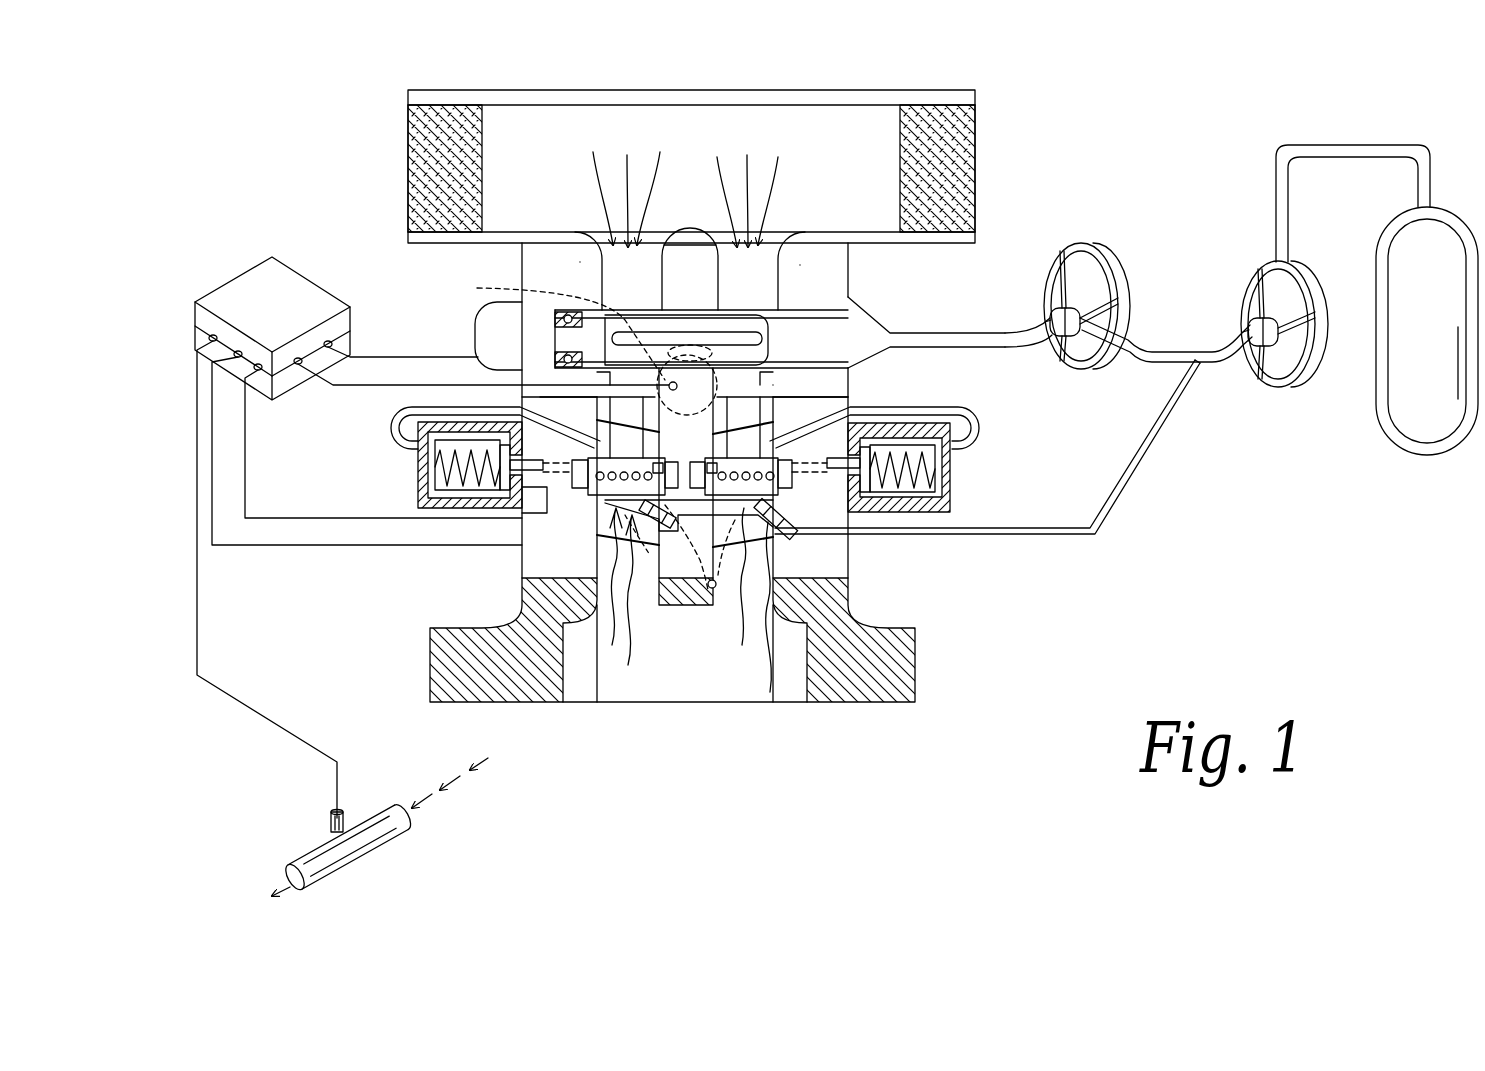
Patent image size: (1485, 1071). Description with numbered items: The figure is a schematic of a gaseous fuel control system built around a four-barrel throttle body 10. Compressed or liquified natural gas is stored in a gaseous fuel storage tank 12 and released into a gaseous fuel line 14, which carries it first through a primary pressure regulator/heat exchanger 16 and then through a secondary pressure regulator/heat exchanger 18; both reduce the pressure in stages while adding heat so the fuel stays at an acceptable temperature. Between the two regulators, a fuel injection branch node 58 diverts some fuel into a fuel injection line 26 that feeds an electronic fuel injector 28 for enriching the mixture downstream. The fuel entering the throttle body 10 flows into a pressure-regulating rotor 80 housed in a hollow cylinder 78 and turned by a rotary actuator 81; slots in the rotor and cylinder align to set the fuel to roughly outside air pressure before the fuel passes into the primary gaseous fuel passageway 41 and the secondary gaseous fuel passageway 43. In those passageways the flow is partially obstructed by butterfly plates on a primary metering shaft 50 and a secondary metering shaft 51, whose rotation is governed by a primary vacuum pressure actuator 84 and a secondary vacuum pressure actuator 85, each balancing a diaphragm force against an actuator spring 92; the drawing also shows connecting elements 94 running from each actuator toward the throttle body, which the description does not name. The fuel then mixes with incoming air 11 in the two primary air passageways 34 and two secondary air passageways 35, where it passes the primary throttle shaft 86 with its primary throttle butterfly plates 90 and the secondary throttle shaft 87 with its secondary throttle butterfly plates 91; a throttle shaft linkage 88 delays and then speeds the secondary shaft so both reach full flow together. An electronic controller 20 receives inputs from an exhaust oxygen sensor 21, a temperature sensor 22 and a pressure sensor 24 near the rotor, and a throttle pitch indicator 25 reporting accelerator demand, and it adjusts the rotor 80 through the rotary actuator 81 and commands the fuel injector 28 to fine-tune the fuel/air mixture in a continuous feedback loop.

The throttle body 10 is at (812, 558).
The air 11 is at (685, 189).
The gaseous fuel storage tank 12 is at (1442, 455).
The gaseous fuel line 14 is at (1312, 142).
The primary pressure regulator/heat exchanger 16 is at (1240, 272).
The secondary pressure regulator/heat exchanger 18 is at (1080, 242).
The electronic controller 20 is at (240, 270).
The exhaust oxygen sensor 21 is at (372, 855).
The temperature sensor 22 is at (660, 378).
The pressure sensor 24 is at (583, 343).
The throttle pitch indicator 25 is at (645, 580).
The fuel injection line 26 is at (965, 536).
The electronic fuel injector 28 is at (695, 610).
The primary air passageways 34 is at (590, 262).
The secondary air passageways 35 is at (790, 265).
The primary gaseous fuel passageway 41 is at (520, 406).
The secondary gaseous fuel passageway 43 is at (790, 388).
The primary metering shaft 50 is at (620, 450).
The secondary metering shaft 51 is at (795, 498).
The fuel injection branch node 58 is at (1205, 364).
The hollow cylinder 78 is at (858, 308).
The pressure-regulating rotor 80 is at (855, 345).
The rotary actuator 81 is at (478, 342).
The primary vacuum pressure actuator 84 is at (418, 490).
The secondary vacuum pressure actuator 85 is at (950, 490).
The primary throttle shaft 86 is at (636, 560).
The secondary throttle shaft 87 is at (742, 575).
The throttle shaft linkage 88 is at (734, 580).
The primary throttle butterfly plates 90 is at (602, 576).
The secondary throttle butterfly plates 91 is at (765, 660).
The actuator spring 92 is at (422, 455).
The wire conduit 94 is at (820, 432).